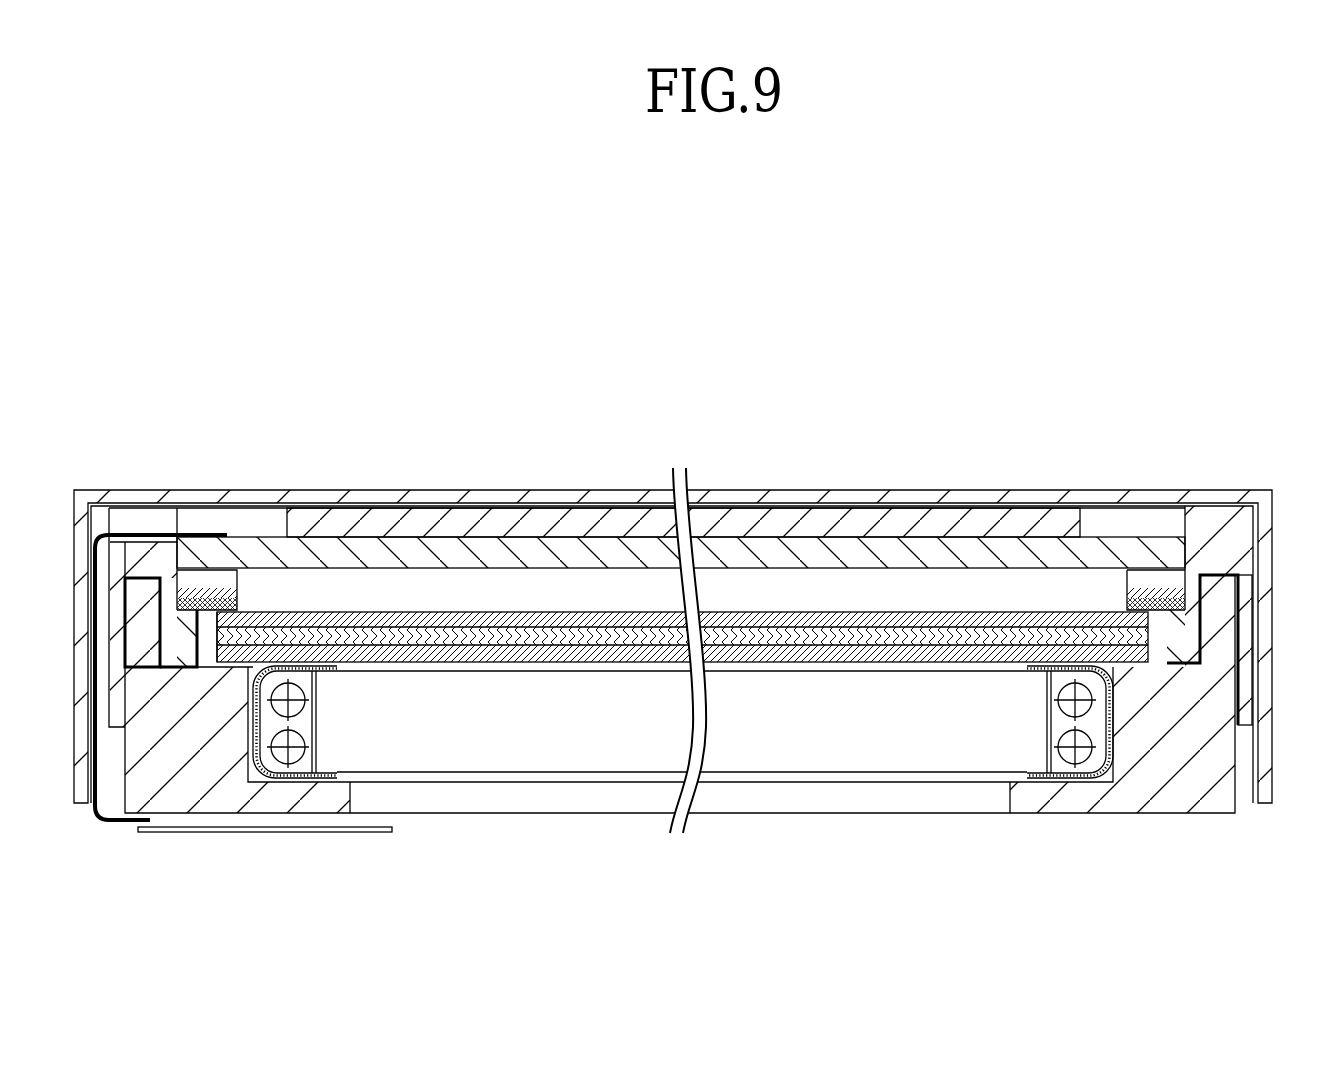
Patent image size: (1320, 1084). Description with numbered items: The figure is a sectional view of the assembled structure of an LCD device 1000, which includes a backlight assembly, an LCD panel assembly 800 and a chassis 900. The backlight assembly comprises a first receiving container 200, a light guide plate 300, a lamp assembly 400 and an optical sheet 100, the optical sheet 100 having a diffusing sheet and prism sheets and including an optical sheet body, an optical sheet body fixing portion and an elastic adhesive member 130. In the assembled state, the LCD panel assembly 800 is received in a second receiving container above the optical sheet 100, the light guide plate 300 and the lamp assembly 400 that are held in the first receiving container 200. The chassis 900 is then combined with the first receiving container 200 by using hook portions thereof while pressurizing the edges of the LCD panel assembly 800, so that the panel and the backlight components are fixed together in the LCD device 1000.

The LCD device 1000 is at (673, 600).
The chassis 900 is at (1145, 482).
The LCD panel assembly 800 is at (770, 487).
The elastic adhesive member 130 is at (242, 596).
The optical sheet 100 is at (853, 605).
The first receiving container 200 is at (1068, 828).
The light guide plate 300 is at (470, 725).
The lamp assembly 400 is at (257, 773).